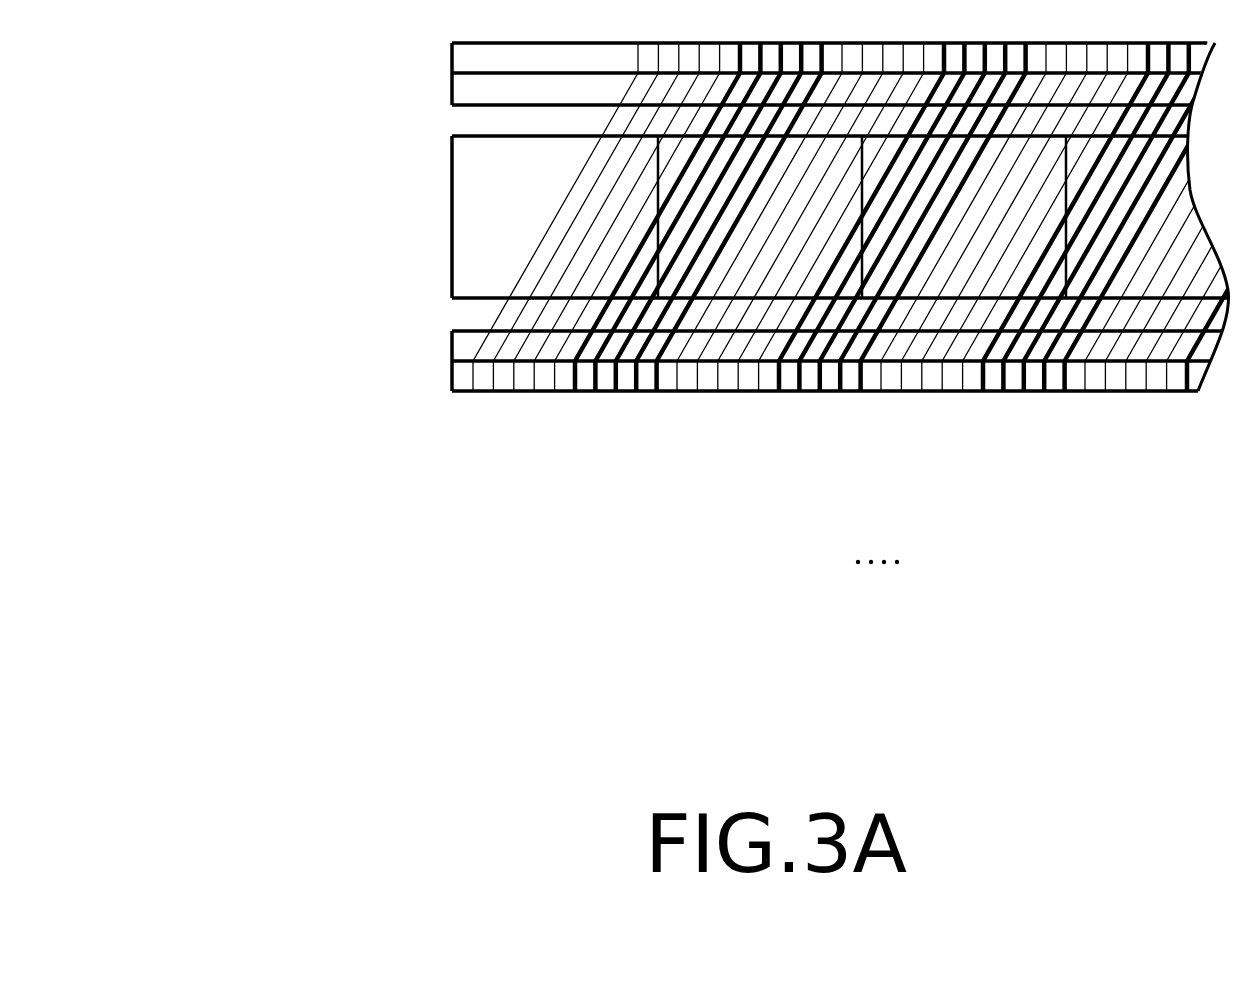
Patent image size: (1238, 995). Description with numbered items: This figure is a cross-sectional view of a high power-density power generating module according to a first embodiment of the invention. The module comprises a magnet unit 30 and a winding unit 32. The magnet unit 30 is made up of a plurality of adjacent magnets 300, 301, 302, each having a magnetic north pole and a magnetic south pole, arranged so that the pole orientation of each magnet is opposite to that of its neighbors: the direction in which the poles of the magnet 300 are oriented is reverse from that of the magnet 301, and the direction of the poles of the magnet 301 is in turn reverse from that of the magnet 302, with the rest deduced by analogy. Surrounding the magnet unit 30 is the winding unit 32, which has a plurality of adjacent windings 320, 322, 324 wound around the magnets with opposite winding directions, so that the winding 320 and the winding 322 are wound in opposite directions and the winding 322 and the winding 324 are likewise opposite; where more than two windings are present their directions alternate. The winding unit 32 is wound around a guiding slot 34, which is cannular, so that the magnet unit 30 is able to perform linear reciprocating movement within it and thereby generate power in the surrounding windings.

The magnet unit 30 is at (240, 238).
The magnet 300 is at (470, 213).
The magnet 301 is at (678, 163).
The magnet 302 is at (891, 284).
The winding unit 32 is at (855, 369).
The winding 320 is at (512, 392).
The winding 322 is at (615, 392).
The winding 324 is at (718, 392).
The guiding slot 34 is at (465, 90).